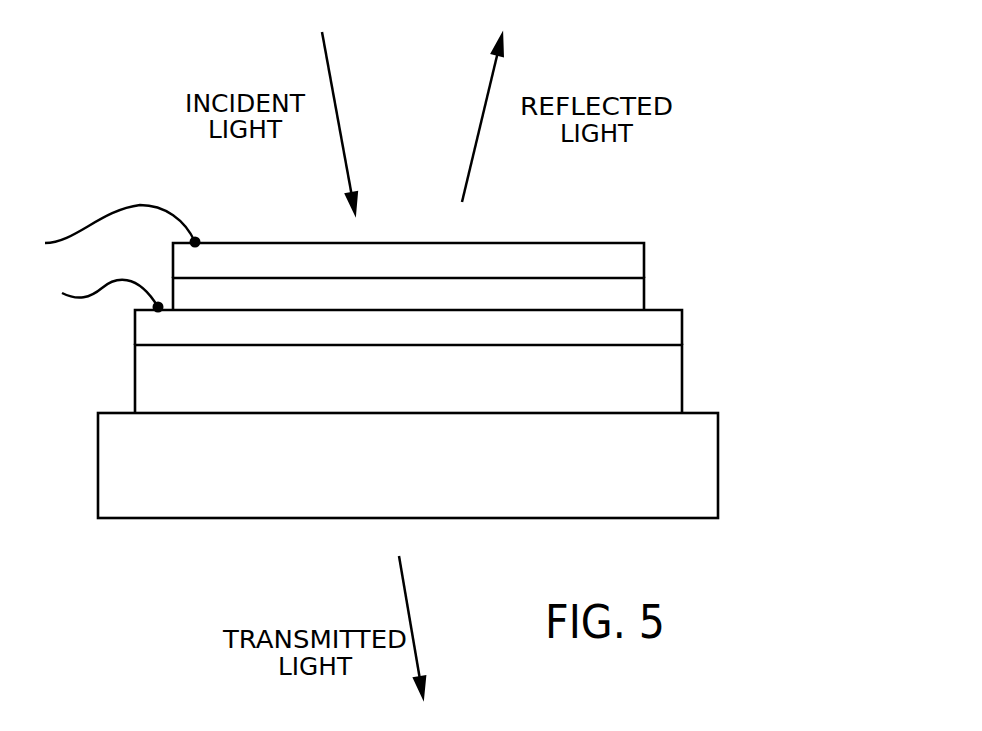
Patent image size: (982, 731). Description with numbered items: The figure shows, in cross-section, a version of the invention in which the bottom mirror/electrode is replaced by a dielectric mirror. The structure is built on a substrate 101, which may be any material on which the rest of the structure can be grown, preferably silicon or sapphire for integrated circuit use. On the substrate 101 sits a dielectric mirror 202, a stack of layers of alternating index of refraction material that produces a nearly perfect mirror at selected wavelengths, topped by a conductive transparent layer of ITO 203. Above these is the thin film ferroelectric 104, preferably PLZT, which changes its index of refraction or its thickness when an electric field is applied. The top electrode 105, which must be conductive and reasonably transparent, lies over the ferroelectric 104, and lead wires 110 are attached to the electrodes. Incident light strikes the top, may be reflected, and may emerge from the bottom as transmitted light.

The substrate 101 is at (719, 475).
The dielectric mirror 202 is at (683, 383).
The conductive transparent layer of ITO 203 is at (683, 330).
The thin film ferroelectric 104 is at (644, 302).
The top electrode 105 is at (647, 257).
The lead wires 110 is at (124, 203).